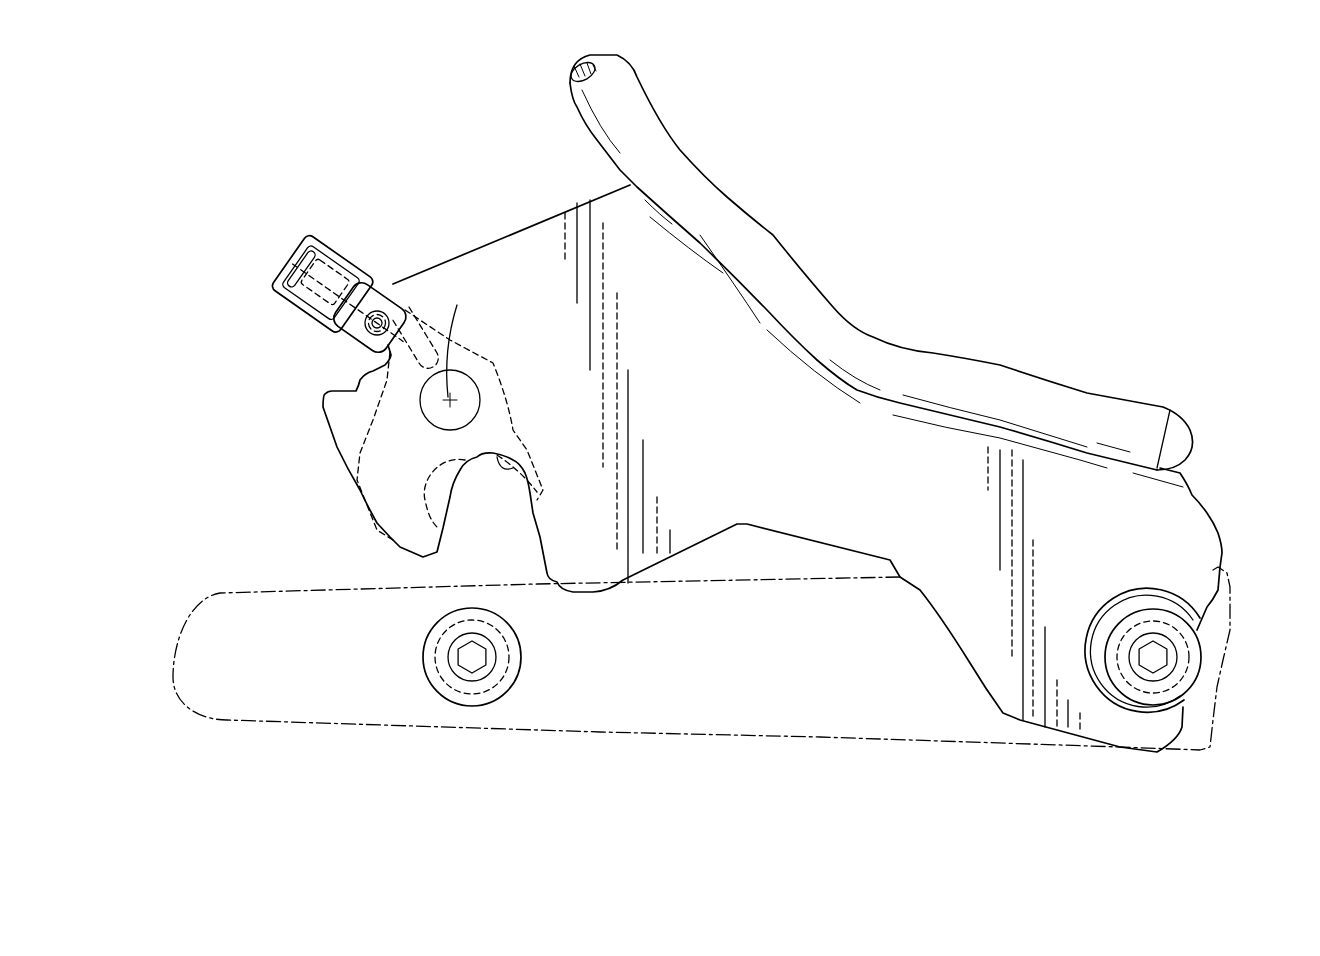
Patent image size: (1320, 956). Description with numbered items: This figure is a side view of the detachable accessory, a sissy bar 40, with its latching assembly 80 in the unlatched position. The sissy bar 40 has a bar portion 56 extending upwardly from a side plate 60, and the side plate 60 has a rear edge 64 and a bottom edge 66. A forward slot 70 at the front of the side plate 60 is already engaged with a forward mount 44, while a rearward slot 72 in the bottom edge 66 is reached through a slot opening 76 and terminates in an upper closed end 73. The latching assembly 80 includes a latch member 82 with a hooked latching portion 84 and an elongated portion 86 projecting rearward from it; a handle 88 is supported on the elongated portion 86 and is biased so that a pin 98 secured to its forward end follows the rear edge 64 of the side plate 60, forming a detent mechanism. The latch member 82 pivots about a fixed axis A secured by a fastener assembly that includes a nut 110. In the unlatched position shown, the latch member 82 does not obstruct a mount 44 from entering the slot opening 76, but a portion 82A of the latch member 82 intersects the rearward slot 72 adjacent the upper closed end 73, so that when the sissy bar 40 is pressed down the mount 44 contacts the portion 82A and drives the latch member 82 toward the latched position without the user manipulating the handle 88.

The sissy bar 40 is at (478, 155).
The mount 44 is at (432, 666).
The bar portion 56 is at (641, 127).
The side plate 60 is at (709, 362).
The rear edge 64 is at (320, 413).
The bottom edge 66 is at (686, 550).
The forward slot 70 is at (1188, 630).
The rearward slot 72 is at (535, 537).
The upper closed end 73 is at (497, 457).
The slot opening 76 is at (548, 580).
The latching assembly 80 is at (258, 214).
The latch member 82 is at (373, 462).
The intersecting portion of the latch member 82A is at (518, 485).
The hooked latching portion 84 is at (437, 553).
The elongated portion 86 is at (342, 250).
The handle 88 is at (277, 300).
The pin 98 is at (381, 322).
The nut 110 is at (460, 372).